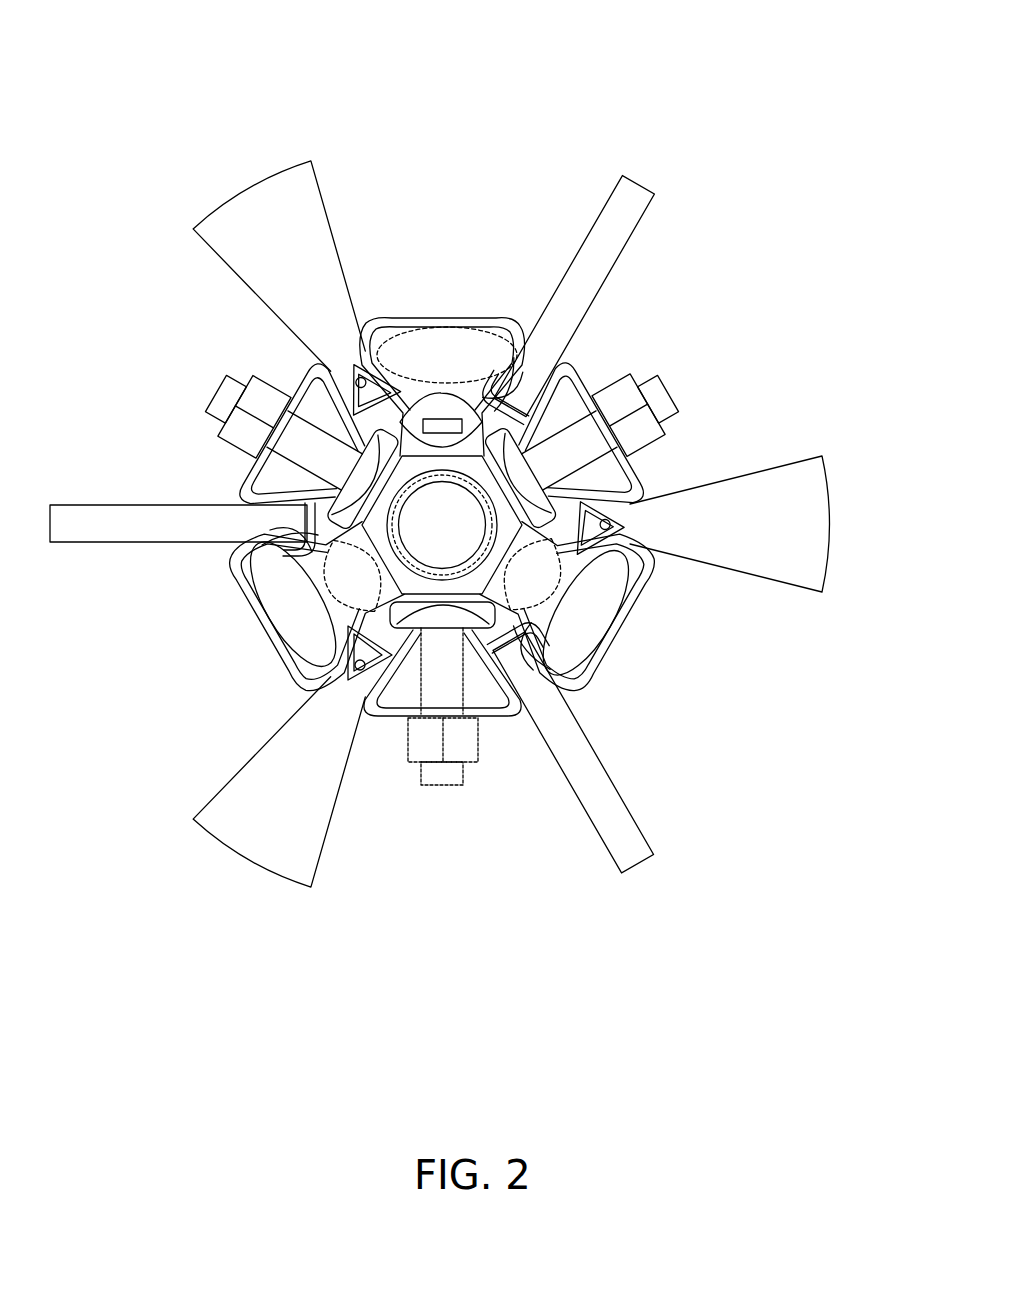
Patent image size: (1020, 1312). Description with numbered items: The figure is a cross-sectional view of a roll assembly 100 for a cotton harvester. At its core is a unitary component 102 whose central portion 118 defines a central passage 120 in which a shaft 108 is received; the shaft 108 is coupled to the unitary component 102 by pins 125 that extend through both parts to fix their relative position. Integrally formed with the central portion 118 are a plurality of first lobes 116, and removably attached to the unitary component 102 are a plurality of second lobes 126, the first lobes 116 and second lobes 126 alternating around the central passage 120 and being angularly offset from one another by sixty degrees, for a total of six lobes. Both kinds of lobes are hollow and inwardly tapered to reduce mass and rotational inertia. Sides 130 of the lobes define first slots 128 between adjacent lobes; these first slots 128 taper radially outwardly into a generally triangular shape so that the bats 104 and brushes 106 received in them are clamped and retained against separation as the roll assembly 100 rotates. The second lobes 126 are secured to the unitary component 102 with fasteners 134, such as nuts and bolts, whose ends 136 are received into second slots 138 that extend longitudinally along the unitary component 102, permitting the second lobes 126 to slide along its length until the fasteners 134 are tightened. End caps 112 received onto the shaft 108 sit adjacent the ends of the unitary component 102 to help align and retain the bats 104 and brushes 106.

The roll assembly 100 is at (122, 80).
The unitary component 102 is at (440, 318).
The bats 104 is at (655, 192).
The brushes 106 is at (230, 195).
The shaft 108 is at (466, 531).
The end caps 112 is at (600, 665).
The first lobes 116 is at (605, 650).
The central portion 118 is at (570, 565).
The central passage 120 is at (375, 595).
The pins 125 is at (447, 418).
The second lobes 126 is at (303, 368).
The first slots 128 is at (247, 520).
The sides 130 is at (250, 508).
The fasteners 134 is at (226, 390).
The ends 136 is at (385, 340).
The second slots 138 is at (470, 340).